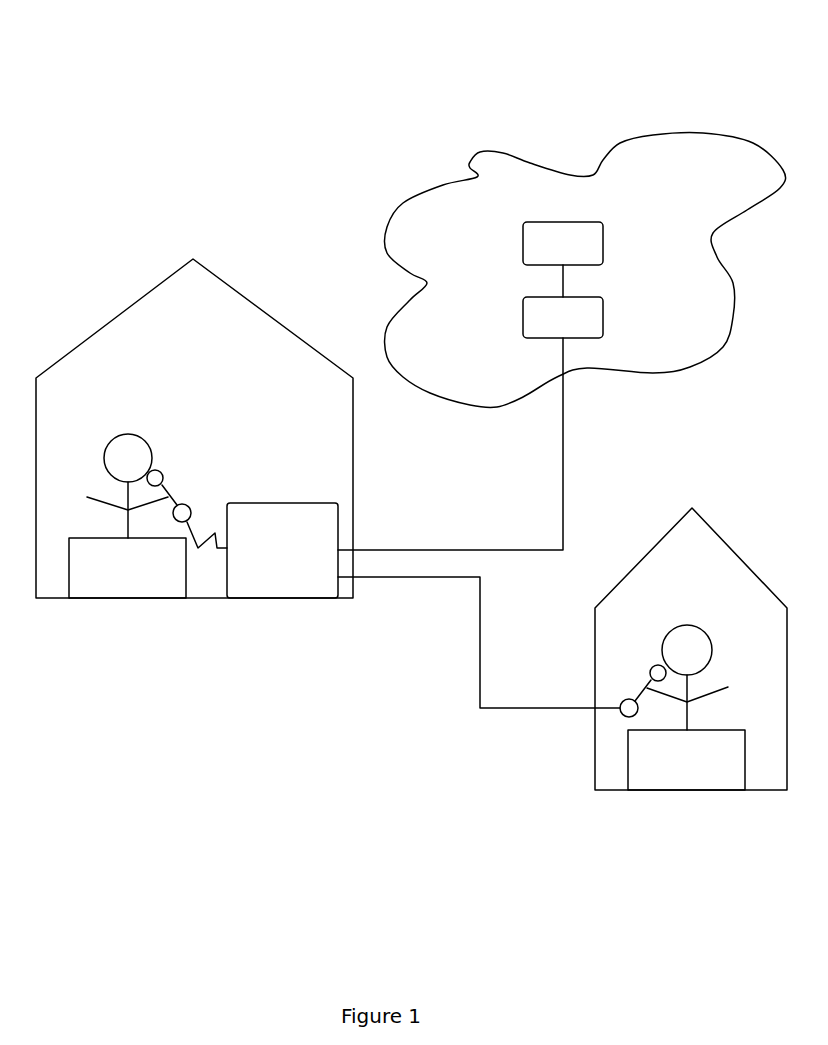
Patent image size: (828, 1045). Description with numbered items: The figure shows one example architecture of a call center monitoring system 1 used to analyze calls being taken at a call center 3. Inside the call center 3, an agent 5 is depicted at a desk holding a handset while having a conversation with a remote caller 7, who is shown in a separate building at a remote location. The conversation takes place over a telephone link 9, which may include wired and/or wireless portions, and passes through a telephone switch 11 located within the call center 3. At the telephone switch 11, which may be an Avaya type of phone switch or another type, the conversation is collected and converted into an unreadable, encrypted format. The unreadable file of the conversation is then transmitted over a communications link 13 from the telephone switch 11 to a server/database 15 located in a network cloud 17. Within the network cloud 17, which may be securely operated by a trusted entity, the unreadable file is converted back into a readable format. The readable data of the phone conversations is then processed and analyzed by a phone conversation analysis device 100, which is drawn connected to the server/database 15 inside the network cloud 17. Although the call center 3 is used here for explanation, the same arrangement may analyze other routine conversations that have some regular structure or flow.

The call center monitoring system 1 is at (344, 95).
The call center 3 is at (220, 275).
The agent 5 is at (143, 433).
The remote caller 7 is at (688, 623).
The telephone link 9 is at (480, 658).
The telephone switch 11 is at (272, 588).
The communications link 13 is at (427, 550).
The server/database 15 is at (603, 317).
The network cloud 17 is at (503, 153).
The phone conversation analysis device 100 is at (603, 242).